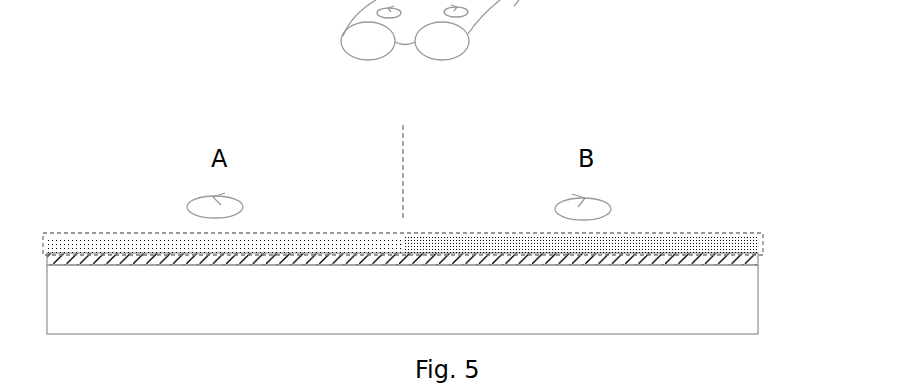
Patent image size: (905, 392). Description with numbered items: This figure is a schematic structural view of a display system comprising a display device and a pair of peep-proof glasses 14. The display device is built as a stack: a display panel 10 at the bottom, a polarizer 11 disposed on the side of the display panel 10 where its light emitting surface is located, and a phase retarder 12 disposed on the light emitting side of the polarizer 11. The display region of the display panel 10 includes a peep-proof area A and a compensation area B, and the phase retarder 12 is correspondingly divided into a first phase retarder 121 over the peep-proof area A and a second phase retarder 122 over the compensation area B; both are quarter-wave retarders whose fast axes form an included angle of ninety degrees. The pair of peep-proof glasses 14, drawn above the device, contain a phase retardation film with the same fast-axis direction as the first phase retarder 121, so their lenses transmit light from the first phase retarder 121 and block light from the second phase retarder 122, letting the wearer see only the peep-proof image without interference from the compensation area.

The display panel 10 is at (745, 298).
The polarizer 11 is at (758, 260).
The phase retarder 12 is at (435, 226).
The first phase retarder 121 is at (268, 242).
The second phase retarder 122 is at (623, 243).
The pair of peep-proof glasses 14 is at (512, 34).